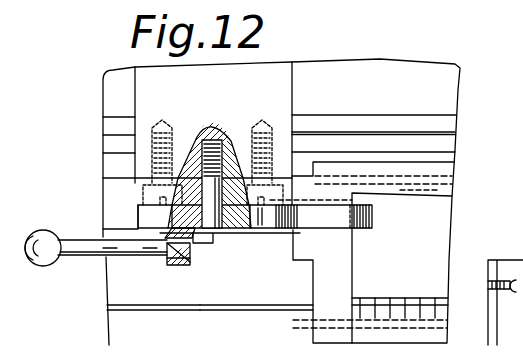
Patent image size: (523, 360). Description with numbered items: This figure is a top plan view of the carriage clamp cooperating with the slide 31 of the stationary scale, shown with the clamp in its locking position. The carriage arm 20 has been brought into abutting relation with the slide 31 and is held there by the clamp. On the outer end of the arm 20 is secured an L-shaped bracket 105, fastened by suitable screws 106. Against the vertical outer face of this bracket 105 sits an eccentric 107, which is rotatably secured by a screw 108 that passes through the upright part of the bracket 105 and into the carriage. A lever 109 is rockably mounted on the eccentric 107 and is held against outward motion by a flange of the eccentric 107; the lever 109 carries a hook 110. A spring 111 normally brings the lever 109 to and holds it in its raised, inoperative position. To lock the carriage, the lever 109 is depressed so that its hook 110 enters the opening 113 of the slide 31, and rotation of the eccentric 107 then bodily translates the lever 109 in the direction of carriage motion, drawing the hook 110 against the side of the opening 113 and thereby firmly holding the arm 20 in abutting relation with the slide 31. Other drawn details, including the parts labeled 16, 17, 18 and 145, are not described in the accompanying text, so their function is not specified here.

The arm 20 is at (277, 88).
The rack 16 is at (370, 298).
The guide plate 17 is at (270, 305).
The guide plate 18 is at (169, 305).
The slide 31 is at (418, 191).
The L-shaped bracket 105 is at (147, 190).
The screws 106 is at (175, 127).
The eccentric 107 is at (167, 233).
The screw 108 is at (203, 243).
The lever 109 is at (307, 216).
The hook 110 is at (372, 216).
The spring 111 is at (258, 220).
The opening 113 is at (452, 185).
The handle 145 is at (85, 258).